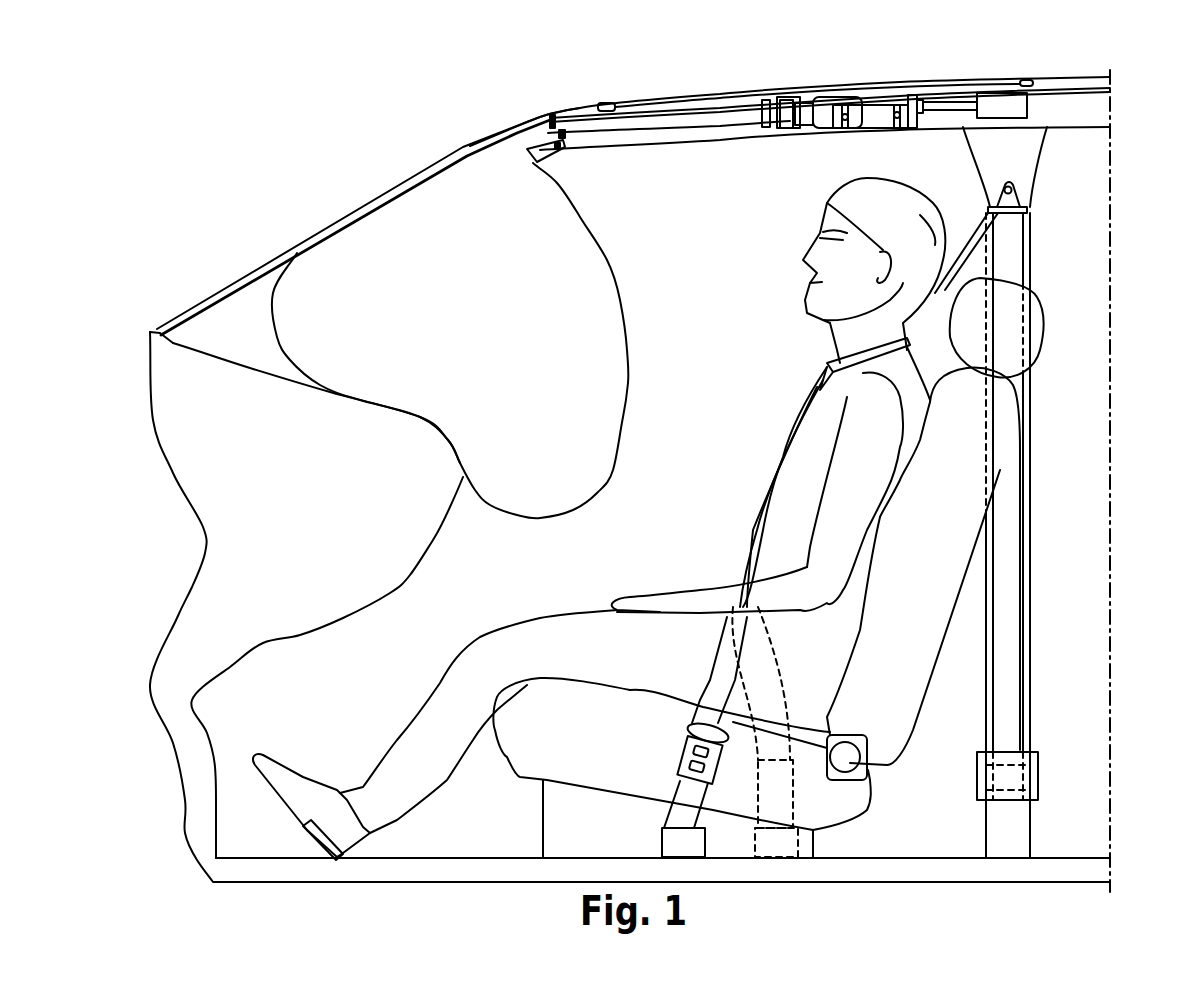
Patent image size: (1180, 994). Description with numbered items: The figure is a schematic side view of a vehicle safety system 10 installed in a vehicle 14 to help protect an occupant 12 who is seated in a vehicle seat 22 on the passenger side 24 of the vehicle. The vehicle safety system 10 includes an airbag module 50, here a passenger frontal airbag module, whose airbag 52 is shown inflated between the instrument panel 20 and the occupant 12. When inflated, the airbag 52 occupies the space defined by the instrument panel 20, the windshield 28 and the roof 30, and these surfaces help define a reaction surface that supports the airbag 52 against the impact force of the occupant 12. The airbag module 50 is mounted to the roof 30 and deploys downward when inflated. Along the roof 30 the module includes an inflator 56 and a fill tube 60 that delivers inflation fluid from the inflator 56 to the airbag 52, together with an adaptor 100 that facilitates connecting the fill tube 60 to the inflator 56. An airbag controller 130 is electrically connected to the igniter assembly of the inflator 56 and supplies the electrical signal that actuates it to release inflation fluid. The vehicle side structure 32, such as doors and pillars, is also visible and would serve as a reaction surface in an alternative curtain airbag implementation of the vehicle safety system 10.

The vehicle safety system 10 is at (622, 82).
The occupant 12 is at (790, 320).
The vehicle 14 is at (310, 128).
The instrument panel 20 is at (408, 533).
The vehicle seat 22 is at (953, 540).
The passenger side 24 is at (717, 150).
The windshield 28 is at (257, 268).
The roof 30 is at (948, 93).
The vehicle side structure 32 is at (1005, 148).
The airbag module 50 is at (512, 100).
The airbag 52 is at (582, 337).
The inflator 56 is at (890, 97).
The fill tube 60 is at (680, 120).
The adaptor 100 is at (823, 110).
The airbag controller 130 is at (993, 107).